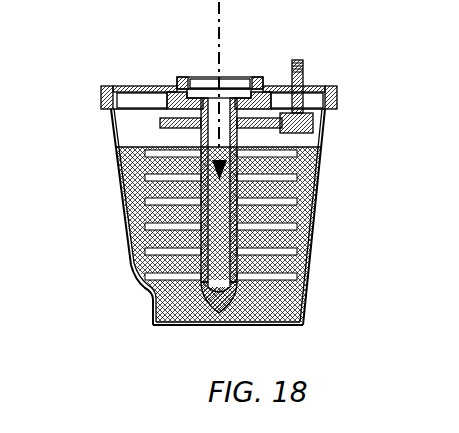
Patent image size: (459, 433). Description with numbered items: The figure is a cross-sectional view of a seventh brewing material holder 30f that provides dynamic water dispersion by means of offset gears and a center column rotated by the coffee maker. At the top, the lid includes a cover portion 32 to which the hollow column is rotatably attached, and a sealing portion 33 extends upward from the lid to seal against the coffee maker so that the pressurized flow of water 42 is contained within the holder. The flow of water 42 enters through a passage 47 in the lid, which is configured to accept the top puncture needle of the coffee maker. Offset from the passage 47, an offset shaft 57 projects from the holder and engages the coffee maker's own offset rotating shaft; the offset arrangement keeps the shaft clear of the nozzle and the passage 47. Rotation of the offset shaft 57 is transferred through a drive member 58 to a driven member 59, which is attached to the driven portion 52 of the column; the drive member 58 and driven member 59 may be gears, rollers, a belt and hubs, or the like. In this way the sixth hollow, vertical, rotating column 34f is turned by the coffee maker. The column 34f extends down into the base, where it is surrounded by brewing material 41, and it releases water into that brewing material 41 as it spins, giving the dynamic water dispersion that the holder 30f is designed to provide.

The seventh brewing material holder 30f is at (67, 94).
The cover portion 32 is at (143, 85).
The sealing portion 33 is at (258, 77).
The flow of water 42 is at (222, 40).
The passage 47 is at (213, 90).
The offset shaft 57 is at (305, 68).
The drive member 58 is at (308, 124).
The driven member 59 is at (160, 120).
The driven portion 52 is at (205, 138).
The brewing material 41 is at (133, 266).
The sixth hollow, vertical, rotating column 34f is at (210, 303).